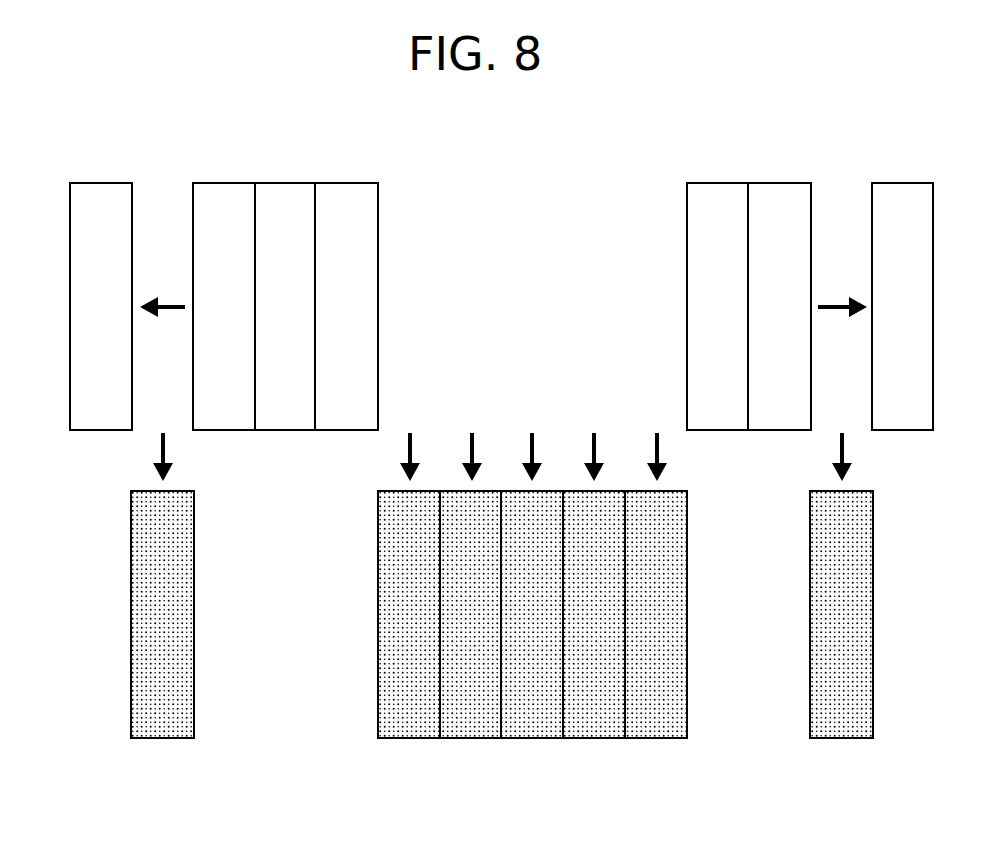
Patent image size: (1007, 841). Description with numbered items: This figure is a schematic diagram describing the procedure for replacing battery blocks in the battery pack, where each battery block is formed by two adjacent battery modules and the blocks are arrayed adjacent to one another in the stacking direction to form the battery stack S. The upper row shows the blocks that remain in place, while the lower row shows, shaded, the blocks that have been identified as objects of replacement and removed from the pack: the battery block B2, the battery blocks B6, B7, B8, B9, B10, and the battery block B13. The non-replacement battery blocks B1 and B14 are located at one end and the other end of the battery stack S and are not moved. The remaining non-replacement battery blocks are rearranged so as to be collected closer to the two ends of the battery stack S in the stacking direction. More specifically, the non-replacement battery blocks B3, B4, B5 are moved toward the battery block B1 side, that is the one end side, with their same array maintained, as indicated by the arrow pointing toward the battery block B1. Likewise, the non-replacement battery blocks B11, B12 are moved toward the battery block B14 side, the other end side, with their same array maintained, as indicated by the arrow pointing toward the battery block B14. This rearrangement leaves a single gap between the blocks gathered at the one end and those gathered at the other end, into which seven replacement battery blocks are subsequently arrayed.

The battery stack S is at (62, 208).
The battery block B1 is at (98, 181).
The battery block B2 is at (160, 741).
The battery block B3 is at (216, 181).
The battery block B4 is at (280, 181).
The battery block B5 is at (340, 181).
The battery block B6 is at (406, 741).
The battery block B7 is at (467, 741).
The battery block B8 is at (530, 741).
The battery block B9 is at (590, 741).
The battery block B10 is at (653, 741).
The battery block B11 is at (715, 181).
The battery block B12 is at (777, 181).
The battery block B13 is at (838, 741).
The battery block B14 is at (900, 181).